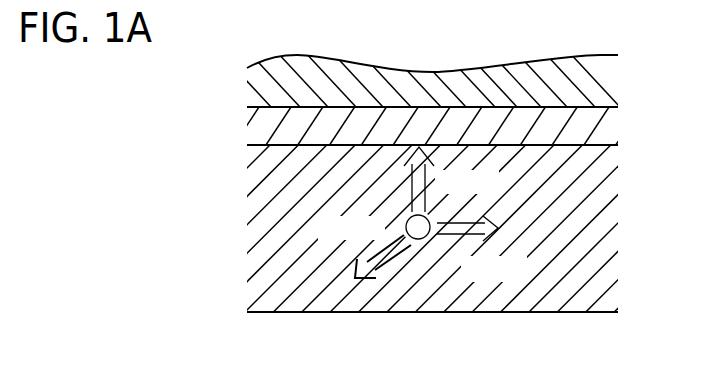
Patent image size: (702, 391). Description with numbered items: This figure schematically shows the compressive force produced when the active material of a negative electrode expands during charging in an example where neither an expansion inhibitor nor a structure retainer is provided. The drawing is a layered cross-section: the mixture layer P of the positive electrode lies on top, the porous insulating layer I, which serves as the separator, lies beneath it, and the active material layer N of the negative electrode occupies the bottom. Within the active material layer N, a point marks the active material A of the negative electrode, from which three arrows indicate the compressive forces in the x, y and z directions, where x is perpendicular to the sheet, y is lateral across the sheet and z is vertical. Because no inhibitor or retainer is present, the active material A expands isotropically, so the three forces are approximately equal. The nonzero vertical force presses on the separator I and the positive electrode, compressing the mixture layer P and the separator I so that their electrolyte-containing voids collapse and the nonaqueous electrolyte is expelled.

The mixture layer of the positive electrode P is at (247, 85).
The porous insulating layer I is at (247, 121).
The active material layer of the negative electrode N is at (249, 231).
The active material of the negative electrode A is at (419, 239).